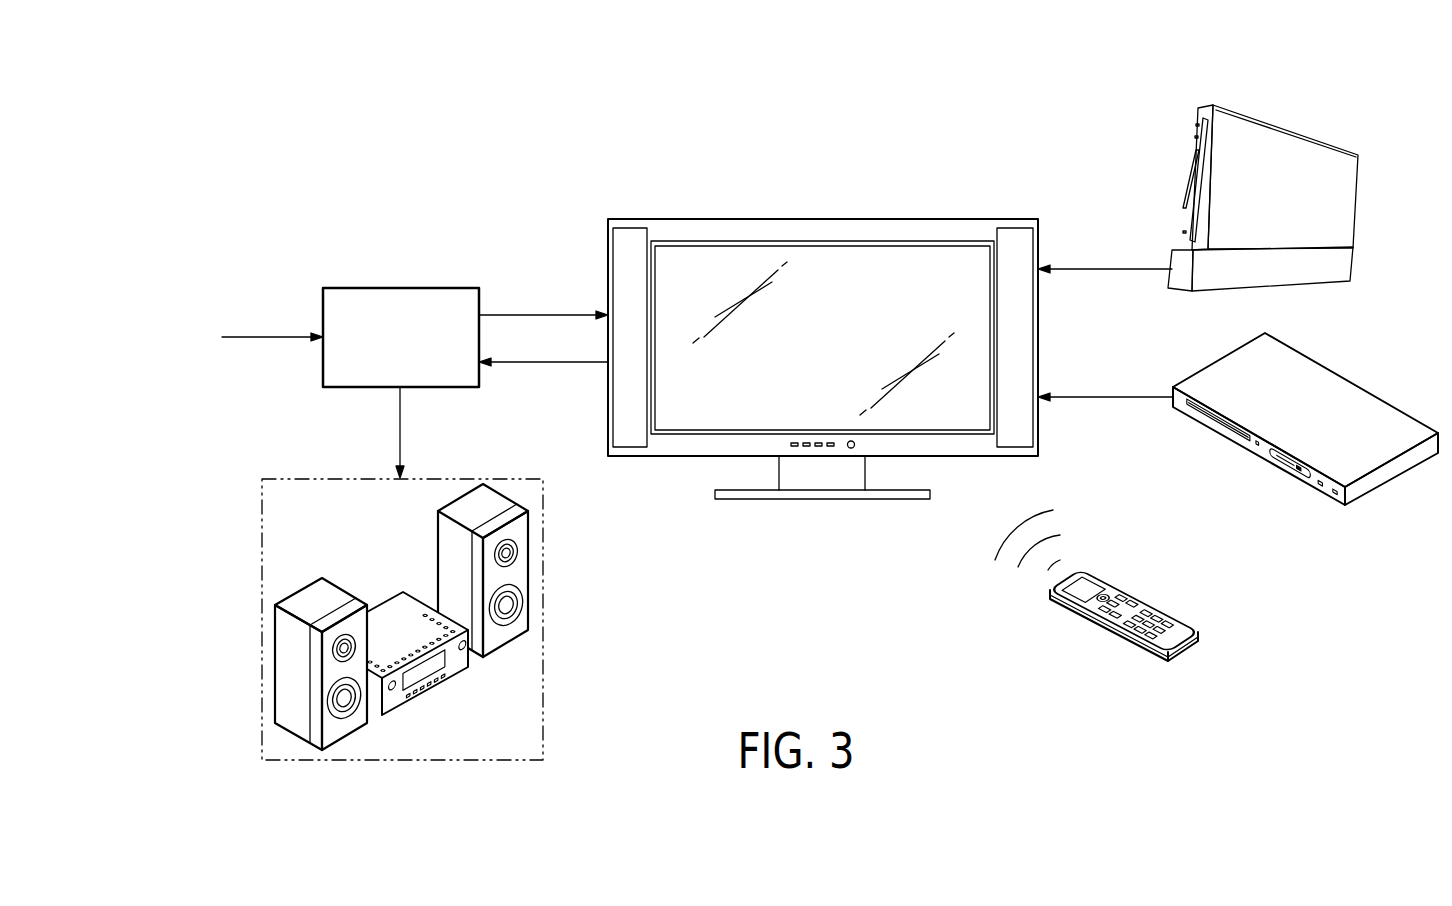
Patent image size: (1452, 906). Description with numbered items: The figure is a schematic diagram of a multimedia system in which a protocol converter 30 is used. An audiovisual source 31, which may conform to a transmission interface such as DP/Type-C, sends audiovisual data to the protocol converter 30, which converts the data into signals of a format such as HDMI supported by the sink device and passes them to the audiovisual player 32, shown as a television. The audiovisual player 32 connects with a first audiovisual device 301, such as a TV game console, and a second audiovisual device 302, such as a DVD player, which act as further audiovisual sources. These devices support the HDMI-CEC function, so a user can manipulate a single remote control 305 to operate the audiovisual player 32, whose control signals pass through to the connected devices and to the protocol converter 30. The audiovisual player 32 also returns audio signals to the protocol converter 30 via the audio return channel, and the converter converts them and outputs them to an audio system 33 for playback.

The protocol converter 30 is at (401, 288).
The audiovisual source 31 is at (148, 302).
The audiovisual player 32 is at (819, 211).
The audio system 33 is at (454, 619).
The first audiovisual device 301 is at (1287, 128).
The second audiovisual device 302 is at (1349, 380).
The remote control 305 is at (1178, 610).